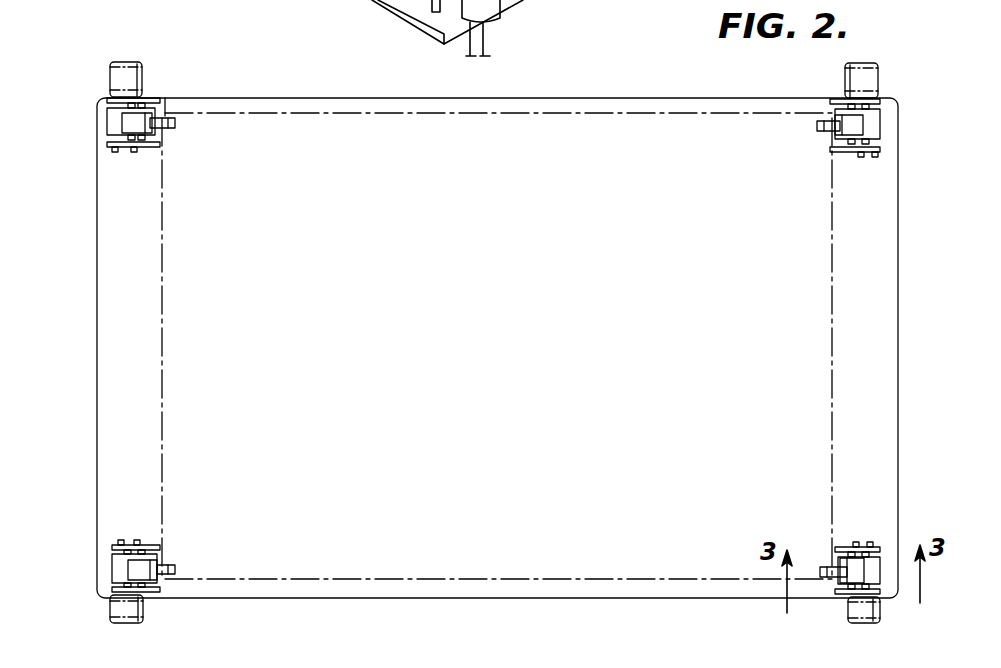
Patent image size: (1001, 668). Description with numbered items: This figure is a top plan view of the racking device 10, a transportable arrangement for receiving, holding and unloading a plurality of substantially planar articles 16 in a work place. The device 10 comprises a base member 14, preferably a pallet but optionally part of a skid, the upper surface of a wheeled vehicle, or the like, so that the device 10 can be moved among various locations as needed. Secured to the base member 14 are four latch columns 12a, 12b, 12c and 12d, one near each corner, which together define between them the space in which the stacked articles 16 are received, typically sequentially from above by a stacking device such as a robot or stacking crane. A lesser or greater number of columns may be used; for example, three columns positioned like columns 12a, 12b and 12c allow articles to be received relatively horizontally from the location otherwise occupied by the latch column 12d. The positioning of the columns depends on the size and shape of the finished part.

The racking device 10 is at (97, 329).
The latch column 12a is at (880, 125).
The latch column 12b is at (870, 545).
The latch column 12c is at (148, 543).
The latch column 12d is at (110, 122).
The base member 14 is at (648, 98).
The planar articles 16 is at (276, 113).